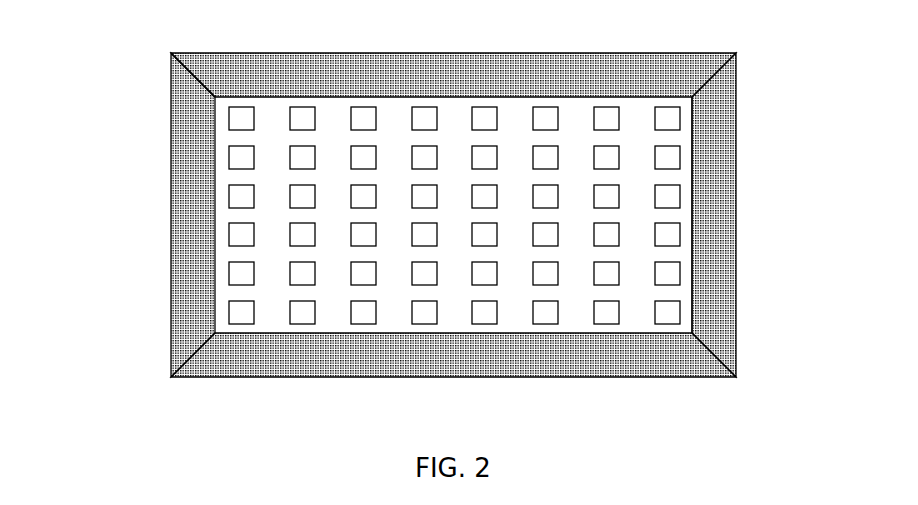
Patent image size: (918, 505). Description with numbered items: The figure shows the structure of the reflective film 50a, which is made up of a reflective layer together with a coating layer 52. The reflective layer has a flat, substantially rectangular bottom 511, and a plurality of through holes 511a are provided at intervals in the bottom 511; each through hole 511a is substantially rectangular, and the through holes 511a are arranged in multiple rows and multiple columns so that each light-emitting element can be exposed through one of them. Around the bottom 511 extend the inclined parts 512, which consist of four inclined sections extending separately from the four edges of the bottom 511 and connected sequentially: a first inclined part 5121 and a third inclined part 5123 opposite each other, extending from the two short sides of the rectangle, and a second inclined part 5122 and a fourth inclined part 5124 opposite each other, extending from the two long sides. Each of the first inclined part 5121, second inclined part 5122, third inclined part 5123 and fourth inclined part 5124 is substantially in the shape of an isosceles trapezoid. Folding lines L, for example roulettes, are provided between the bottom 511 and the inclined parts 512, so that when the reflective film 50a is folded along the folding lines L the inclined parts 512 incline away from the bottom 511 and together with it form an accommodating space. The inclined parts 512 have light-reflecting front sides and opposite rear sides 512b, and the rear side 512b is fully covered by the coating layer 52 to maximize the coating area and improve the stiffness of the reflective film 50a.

The reflective film 50a is at (481, 31).
The coating layer 52 is at (722, 247).
The inclined parts 512 is at (452, 220).
The fourth inclined part 5124 is at (625, 53).
The first inclined part 5121 is at (737, 102).
The second inclined part 5122 is at (398, 373).
The third inclined part 5123 is at (172, 233).
The rear side 512b is at (725, 212).
The folding lines L is at (238, 95).
The bottom 511 is at (683, 140).
The through holes 511a is at (676, 160).